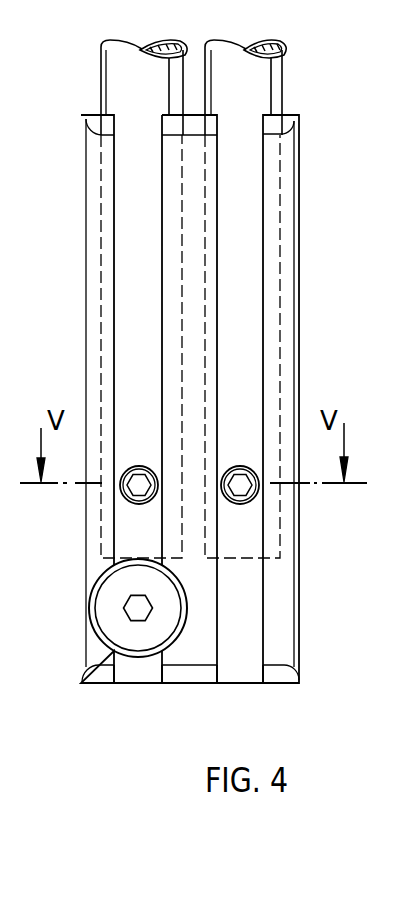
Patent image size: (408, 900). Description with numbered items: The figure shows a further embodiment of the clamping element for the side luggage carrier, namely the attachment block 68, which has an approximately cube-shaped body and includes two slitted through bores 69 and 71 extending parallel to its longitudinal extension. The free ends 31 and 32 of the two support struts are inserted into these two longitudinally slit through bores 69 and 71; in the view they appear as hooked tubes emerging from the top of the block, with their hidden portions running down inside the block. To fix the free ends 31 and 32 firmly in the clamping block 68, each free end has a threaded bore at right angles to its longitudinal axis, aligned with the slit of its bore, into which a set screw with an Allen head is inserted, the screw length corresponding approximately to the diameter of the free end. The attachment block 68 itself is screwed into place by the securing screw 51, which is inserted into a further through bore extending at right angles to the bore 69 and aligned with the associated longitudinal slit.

The free end 31 is at (118, 78).
The free end 32 is at (255, 82).
The securing screw 51 is at (108, 597).
The attachment block 68 is at (80, 620).
The slitted through bore 69 is at (127, 684).
The slitted through bore 71 is at (253, 684).